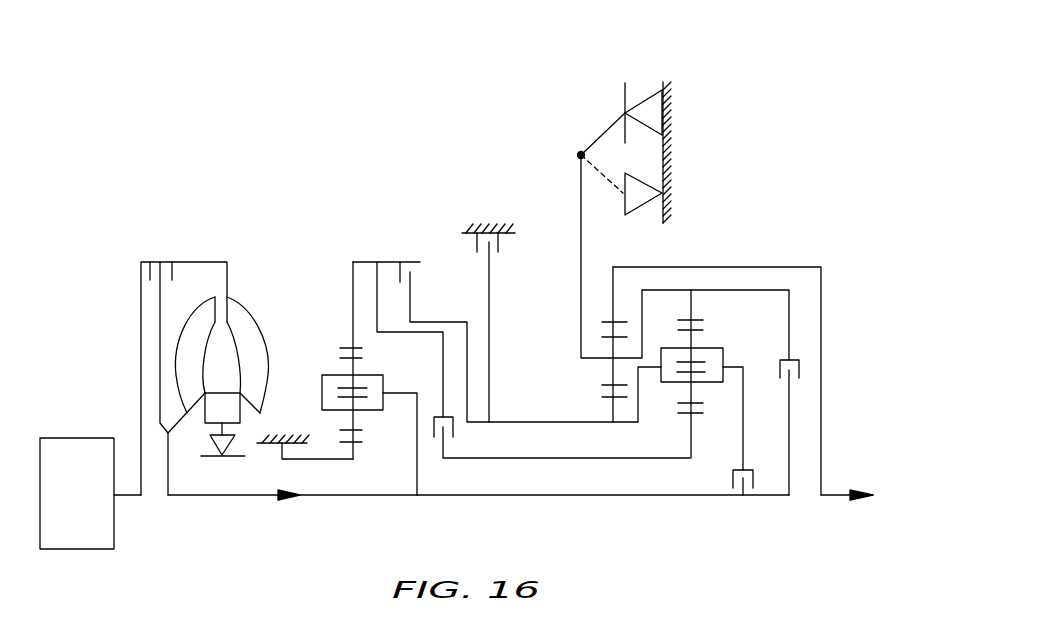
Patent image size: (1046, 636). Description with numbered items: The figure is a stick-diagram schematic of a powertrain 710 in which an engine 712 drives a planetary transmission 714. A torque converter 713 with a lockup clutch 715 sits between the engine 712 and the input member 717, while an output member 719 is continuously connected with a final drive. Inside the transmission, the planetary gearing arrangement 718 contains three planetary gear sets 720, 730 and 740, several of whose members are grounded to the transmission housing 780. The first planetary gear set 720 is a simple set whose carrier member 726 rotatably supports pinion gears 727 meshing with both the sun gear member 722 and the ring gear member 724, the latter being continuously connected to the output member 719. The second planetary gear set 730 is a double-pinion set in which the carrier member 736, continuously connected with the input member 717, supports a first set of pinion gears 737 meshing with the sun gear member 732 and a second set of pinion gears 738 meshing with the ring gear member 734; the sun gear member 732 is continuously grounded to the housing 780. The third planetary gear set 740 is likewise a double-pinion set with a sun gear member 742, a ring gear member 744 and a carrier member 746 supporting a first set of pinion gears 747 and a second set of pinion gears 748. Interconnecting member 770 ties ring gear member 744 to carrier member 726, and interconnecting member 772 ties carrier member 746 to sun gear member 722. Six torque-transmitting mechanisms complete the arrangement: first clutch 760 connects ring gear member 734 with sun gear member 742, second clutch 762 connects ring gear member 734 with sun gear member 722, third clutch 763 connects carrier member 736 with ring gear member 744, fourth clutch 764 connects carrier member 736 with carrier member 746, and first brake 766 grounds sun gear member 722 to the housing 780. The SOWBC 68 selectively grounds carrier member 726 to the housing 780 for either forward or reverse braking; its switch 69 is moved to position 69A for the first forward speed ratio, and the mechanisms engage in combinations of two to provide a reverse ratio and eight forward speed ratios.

The engine 712 is at (61, 507).
The torque converter 713 is at (189, 441).
The lockup clutch 715 is at (154, 291).
The input member 717 is at (232, 497).
The output member 719 is at (835, 497).
The transmission housing 780 is at (283, 436).
The second planetary gear set 730 is at (364, 448).
The sun gear member 732 is at (348, 445).
The ring gear member 734 is at (348, 347).
The carrier member 736 is at (326, 375).
The first set of pinion gears 737 is at (357, 417).
The second set of pinion gears 738 is at (356, 368).
The first clutch 760 is at (434, 448).
The second clutch 762 is at (421, 289).
The first brake 766 is at (501, 261).
The planetary gearing arrangement 718 is at (477, 189).
The planetary transmission 714 is at (347, 211).
The powertrain 710 is at (326, 234).
The SOWBC 68 is at (582, 79).
The switch 69 is at (603, 133).
The switch position 69A is at (603, 180).
The carrier member 726 is at (597, 363).
The interconnecting member 770 is at (691, 266).
The ring gear member 744 is at (698, 313).
The pinion gears 727 is at (612, 343).
The ring gear member 724 is at (612, 318).
The sun gear member 722 is at (605, 405).
The first planetary gear set 720 is at (572, 393).
The interconnecting member 772 is at (628, 423).
The third planetary gear set 740 is at (703, 428).
The second set of pinion gears 748 is at (686, 340).
The carrier member 746 is at (724, 357).
The first set of pinion gears 747 is at (687, 392).
The sun gear member 742 is at (687, 417).
The third clutch 763 is at (796, 386).
The fourth clutch 764 is at (756, 501).